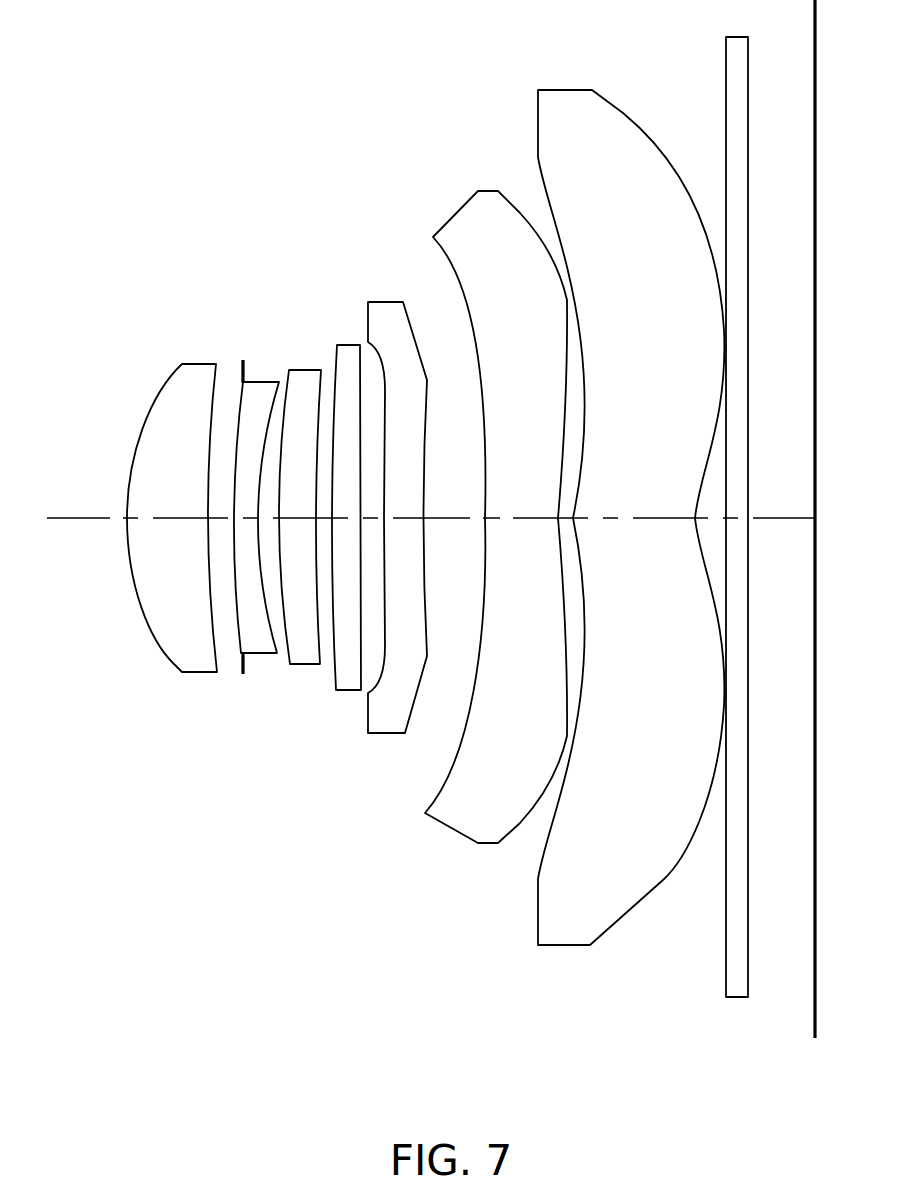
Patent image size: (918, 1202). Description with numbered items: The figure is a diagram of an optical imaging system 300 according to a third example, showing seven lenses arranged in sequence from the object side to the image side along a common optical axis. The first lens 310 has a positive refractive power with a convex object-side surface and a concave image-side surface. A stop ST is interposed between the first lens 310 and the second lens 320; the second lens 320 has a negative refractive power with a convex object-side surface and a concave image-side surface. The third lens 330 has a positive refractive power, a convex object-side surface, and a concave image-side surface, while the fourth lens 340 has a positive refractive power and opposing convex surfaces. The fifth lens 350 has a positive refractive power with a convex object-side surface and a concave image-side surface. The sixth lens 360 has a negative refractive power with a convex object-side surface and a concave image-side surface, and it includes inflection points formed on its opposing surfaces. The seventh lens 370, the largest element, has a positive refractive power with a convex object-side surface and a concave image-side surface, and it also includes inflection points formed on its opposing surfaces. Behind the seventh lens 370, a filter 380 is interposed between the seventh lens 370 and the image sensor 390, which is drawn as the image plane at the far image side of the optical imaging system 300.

The optical imaging system 300 is at (281, 138).
The stop ST is at (243, 358).
The first lens 310 is at (175, 666).
The second lens 320 is at (257, 654).
The third lens 330 is at (302, 665).
The fourth lens 340 is at (345, 691).
The fifth lens 350 is at (380, 735).
The sixth lens 360 is at (452, 821).
The seventh lens 370 is at (565, 946).
The filter 380 is at (737, 998).
The image sensor 390 is at (812, 1024).